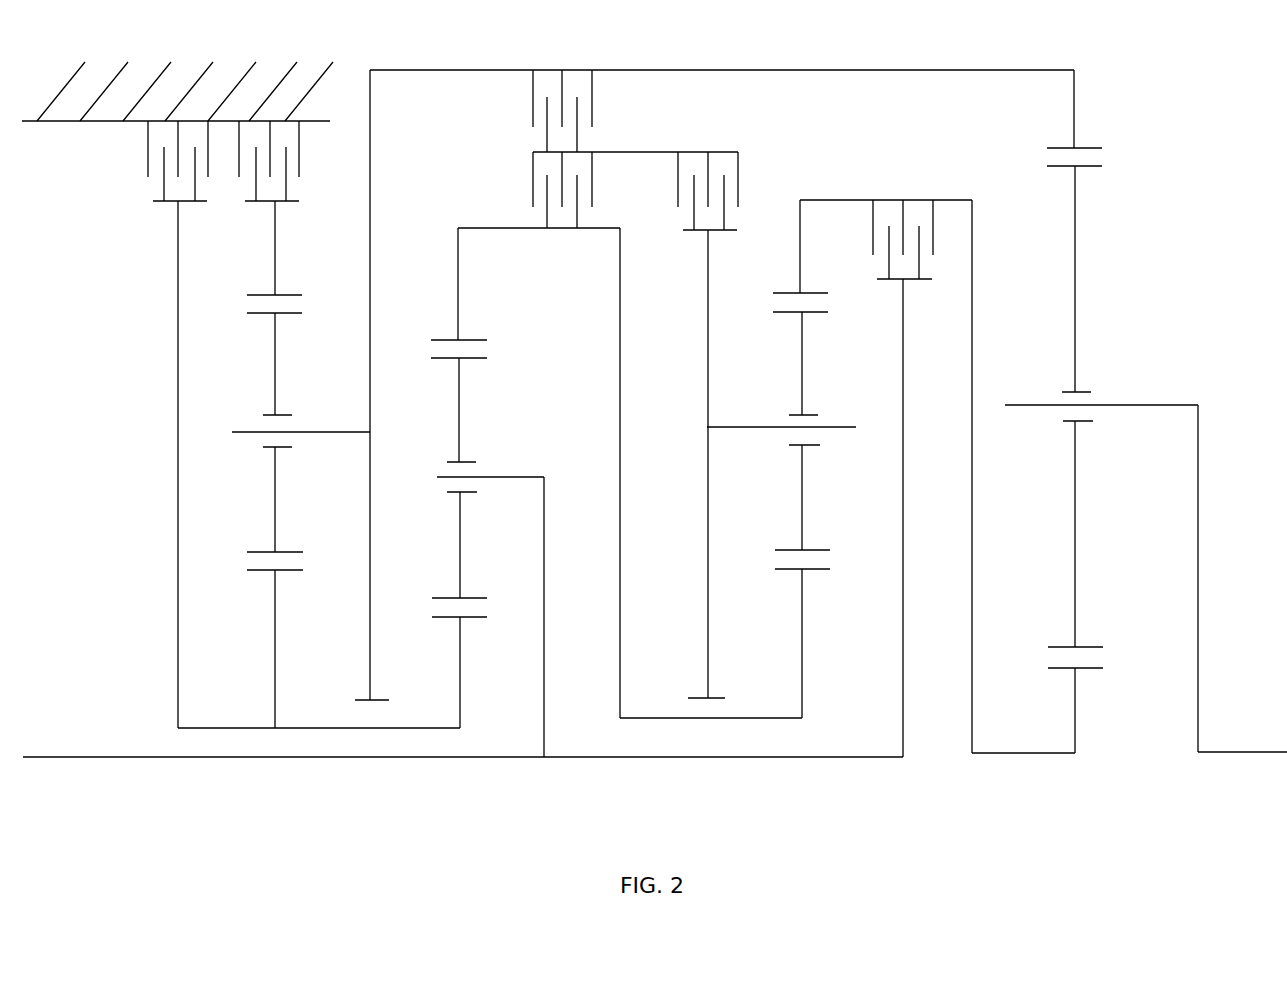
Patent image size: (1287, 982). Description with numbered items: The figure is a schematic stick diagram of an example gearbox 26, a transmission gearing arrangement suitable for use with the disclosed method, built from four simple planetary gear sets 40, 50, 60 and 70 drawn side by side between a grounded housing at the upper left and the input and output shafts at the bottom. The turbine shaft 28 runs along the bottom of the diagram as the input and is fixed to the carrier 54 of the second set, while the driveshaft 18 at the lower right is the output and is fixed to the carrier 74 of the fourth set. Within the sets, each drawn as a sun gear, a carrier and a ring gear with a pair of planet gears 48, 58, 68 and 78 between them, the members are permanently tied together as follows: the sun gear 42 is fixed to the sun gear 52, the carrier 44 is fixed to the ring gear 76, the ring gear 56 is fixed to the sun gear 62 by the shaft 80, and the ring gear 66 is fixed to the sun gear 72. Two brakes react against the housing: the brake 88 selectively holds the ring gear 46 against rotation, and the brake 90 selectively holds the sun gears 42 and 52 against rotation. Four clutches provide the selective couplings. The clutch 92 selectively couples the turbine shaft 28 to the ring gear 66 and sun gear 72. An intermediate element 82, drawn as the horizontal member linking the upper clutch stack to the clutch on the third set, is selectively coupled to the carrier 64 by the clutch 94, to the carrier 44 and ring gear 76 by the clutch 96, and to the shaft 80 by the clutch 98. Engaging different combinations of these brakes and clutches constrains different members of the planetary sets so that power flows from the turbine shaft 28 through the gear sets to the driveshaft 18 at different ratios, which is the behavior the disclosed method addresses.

The driveshaft 18 is at (1262, 753).
The transmission gearbox 26 is at (712, 785).
The turbine shaft 28 is at (206, 757).
The planetary gear set 40 is at (319, 443).
The sun gear 42 is at (274, 612).
The carrier 44 is at (370, 303).
The ring gear 46 is at (275, 257).
The first planet gears 48 is at (276, 375).
The planetary gear set 50 is at (480, 522).
The sun gear 52 is at (458, 658).
The carrier 54 is at (547, 570).
The ring gear 56 is at (460, 302).
The second planet gears 58 is at (462, 417).
The planetary gear set 60 is at (758, 509).
The sun gear 62 is at (800, 610).
The carrier 64 is at (707, 395).
The ring gear 66 is at (802, 255).
The third planet gears 68 is at (803, 375).
The planetary gear set 70 is at (784, 443).
The sun gear 72 is at (1073, 715).
The carrier 74 is at (1173, 405).
The ring gear 76 is at (1073, 122).
The fourth planet gears 78 is at (1077, 337).
The shaft 80 is at (618, 270).
The intermediate element 82 is at (653, 152).
The brake 88 is at (300, 163).
The brake 90 is at (148, 152).
The clutch 92 is at (913, 200).
The clutch 94 is at (688, 152).
The clutch 96 is at (533, 117).
The clutch 98 is at (533, 185).